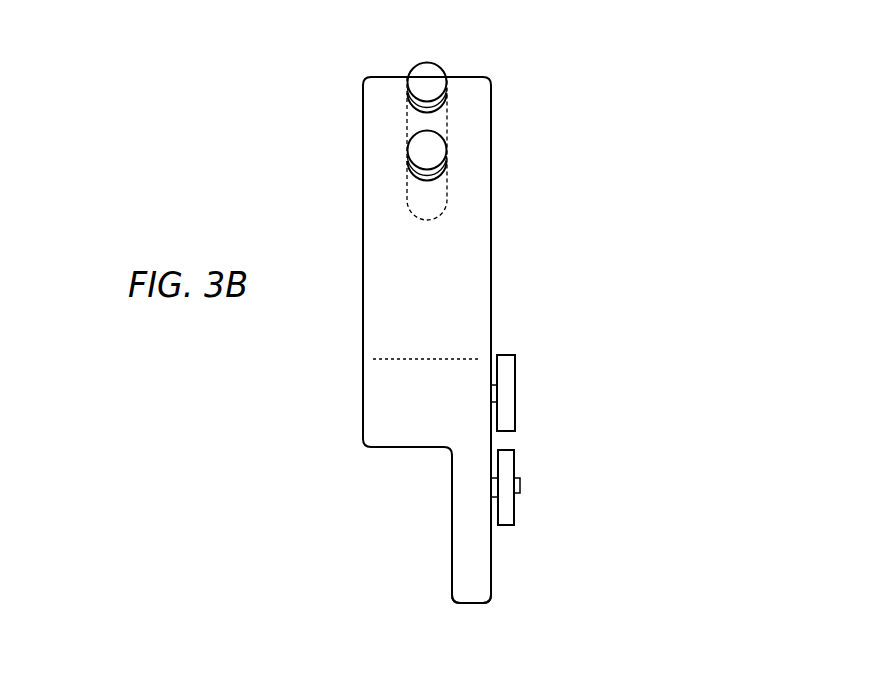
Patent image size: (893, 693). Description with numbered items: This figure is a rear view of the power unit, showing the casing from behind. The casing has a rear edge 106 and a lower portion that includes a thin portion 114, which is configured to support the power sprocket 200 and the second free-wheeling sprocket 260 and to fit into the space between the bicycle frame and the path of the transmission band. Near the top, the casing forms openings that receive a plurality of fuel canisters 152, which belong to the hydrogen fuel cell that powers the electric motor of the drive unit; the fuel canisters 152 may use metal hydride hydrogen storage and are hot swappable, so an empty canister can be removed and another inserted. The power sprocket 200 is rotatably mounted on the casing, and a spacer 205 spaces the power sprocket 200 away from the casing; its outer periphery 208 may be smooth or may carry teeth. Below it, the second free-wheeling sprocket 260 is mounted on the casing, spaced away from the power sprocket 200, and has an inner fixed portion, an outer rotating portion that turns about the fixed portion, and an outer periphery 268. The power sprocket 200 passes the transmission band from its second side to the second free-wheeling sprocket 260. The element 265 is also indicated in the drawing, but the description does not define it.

The rear edge 106 is at (383, 395).
The thin portion 114 is at (452, 565).
The fuel canisters 152 is at (427, 152).
The power sprocket 200 is at (508, 382).
The spacer 205 is at (494, 383).
The outer periphery 208 is at (506, 354).
The second free-wheeling sprocket 260 is at (527, 513).
The second clip flange 265 is at (492, 497).
The outer periphery 268 is at (508, 525).